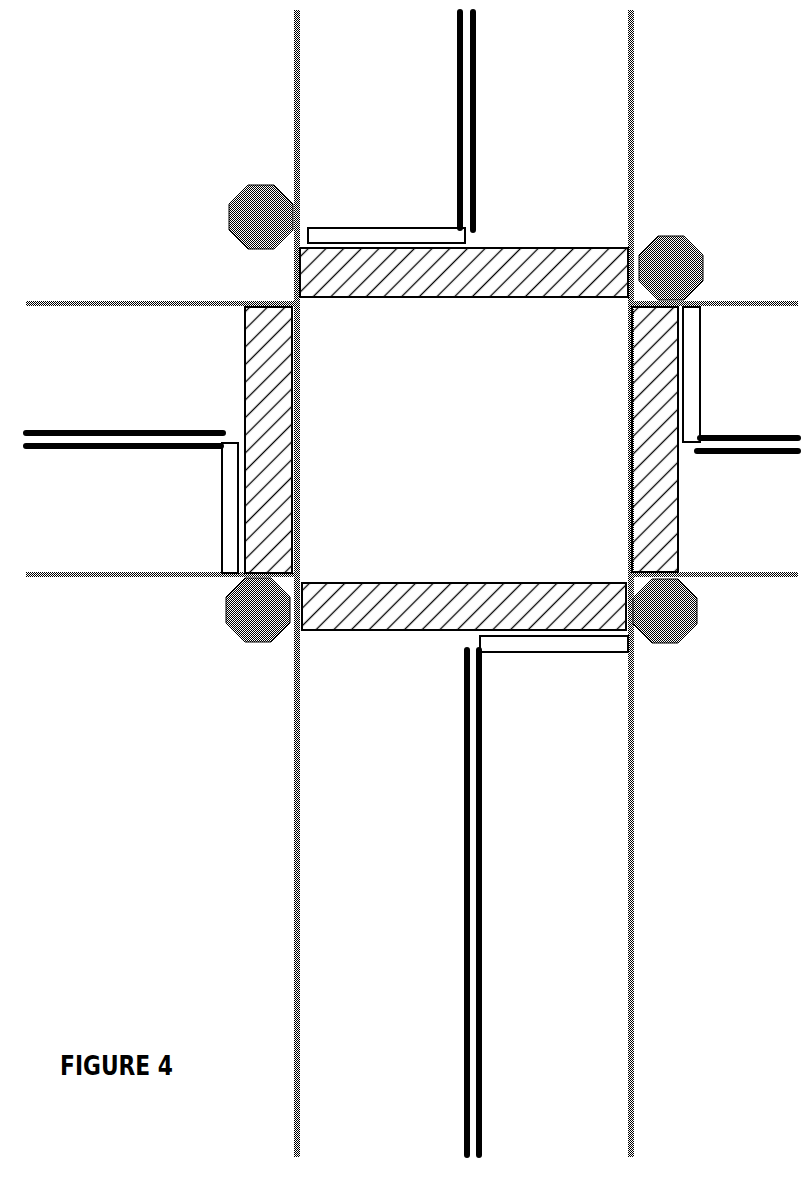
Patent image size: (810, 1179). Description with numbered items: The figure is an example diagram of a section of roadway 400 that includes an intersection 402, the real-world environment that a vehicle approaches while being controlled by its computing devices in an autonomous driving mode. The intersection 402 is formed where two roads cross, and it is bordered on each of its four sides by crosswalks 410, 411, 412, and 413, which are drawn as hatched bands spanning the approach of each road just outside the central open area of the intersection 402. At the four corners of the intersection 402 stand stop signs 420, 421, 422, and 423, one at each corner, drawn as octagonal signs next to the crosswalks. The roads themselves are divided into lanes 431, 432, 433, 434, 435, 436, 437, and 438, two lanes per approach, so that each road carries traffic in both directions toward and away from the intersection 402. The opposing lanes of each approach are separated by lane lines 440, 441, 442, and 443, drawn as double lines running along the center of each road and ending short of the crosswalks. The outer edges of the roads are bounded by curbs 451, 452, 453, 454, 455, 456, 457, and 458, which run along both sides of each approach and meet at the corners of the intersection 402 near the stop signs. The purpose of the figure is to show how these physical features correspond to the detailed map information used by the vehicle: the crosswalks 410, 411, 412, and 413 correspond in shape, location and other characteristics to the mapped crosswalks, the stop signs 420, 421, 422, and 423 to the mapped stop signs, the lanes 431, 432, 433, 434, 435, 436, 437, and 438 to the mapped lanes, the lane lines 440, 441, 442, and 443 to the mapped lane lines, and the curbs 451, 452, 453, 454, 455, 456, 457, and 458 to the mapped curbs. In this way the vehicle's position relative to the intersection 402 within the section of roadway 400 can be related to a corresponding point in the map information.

The section of roadway 400 is at (117, 1036).
The intersection 402 is at (464, 440).
The crosswalk 410 is at (297, 282).
The crosswalk 411 is at (680, 552).
The crosswalk 412 is at (330, 632).
The crosswalk 413 is at (240, 542).
The stop sign 420 is at (230, 224).
The stop sign 421 is at (690, 240).
The stop sign 422 is at (680, 648).
The stop sign 423 is at (232, 637).
The lane 431 is at (716, 370).
The lane 432 is at (716, 502).
The lane 433 is at (500, 828).
The lane 434 is at (375, 832).
The lane 435 is at (175, 500).
The lane 436 is at (172, 378).
The lane 437 is at (383, 167).
The lane 438 is at (558, 185).
The lane line 440 is at (457, 138).
The lane line 441 is at (712, 430).
The lane line 442 is at (465, 777).
The lane line 443 is at (160, 432).
The curb 451 is at (710, 300).
The curb 452 is at (700, 608).
The curb 453 is at (634, 698).
The curb 454 is at (295, 750).
The curb 455 is at (165, 572).
The curb 456 is at (155, 300).
The curb 457 is at (295, 107).
The curb 458 is at (634, 103).